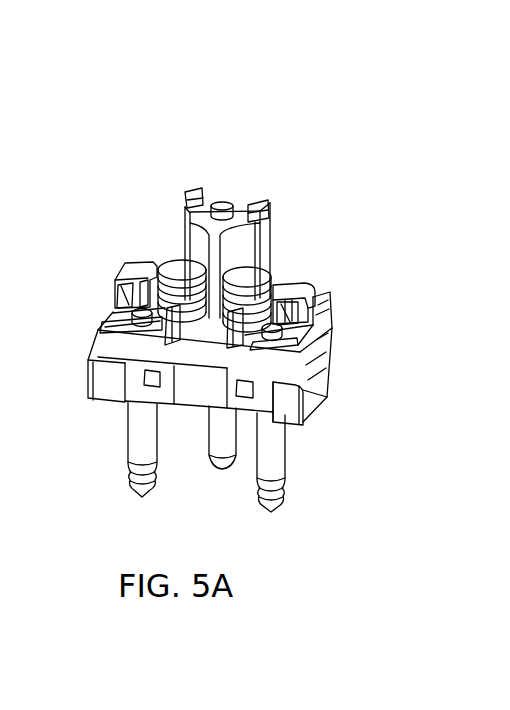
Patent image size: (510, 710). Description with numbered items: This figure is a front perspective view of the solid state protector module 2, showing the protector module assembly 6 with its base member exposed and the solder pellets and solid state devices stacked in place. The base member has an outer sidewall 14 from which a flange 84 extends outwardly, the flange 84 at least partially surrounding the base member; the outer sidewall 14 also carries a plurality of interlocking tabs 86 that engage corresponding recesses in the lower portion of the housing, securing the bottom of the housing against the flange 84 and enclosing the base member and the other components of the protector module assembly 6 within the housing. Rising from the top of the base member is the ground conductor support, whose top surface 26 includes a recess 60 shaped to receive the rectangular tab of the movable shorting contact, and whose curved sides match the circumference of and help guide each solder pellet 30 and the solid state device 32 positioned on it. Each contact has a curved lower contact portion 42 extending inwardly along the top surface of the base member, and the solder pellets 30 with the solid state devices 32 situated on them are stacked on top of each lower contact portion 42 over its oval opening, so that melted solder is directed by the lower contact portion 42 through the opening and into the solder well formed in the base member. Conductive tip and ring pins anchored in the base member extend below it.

The solid state protector module 2 is at (242, 160).
The protector module assembly 6 is at (328, 288).
The outer sidewall 14 is at (320, 323).
The top surface of the ground conductor support 26 is at (262, 197).
The solder pellet 30 is at (192, 315).
The solid state device 32 is at (172, 265).
The lower contact portion 42 is at (186, 305).
The recess 60 is at (203, 197).
The flange 84 is at (327, 367).
The interlocking tabs 86 is at (152, 378).